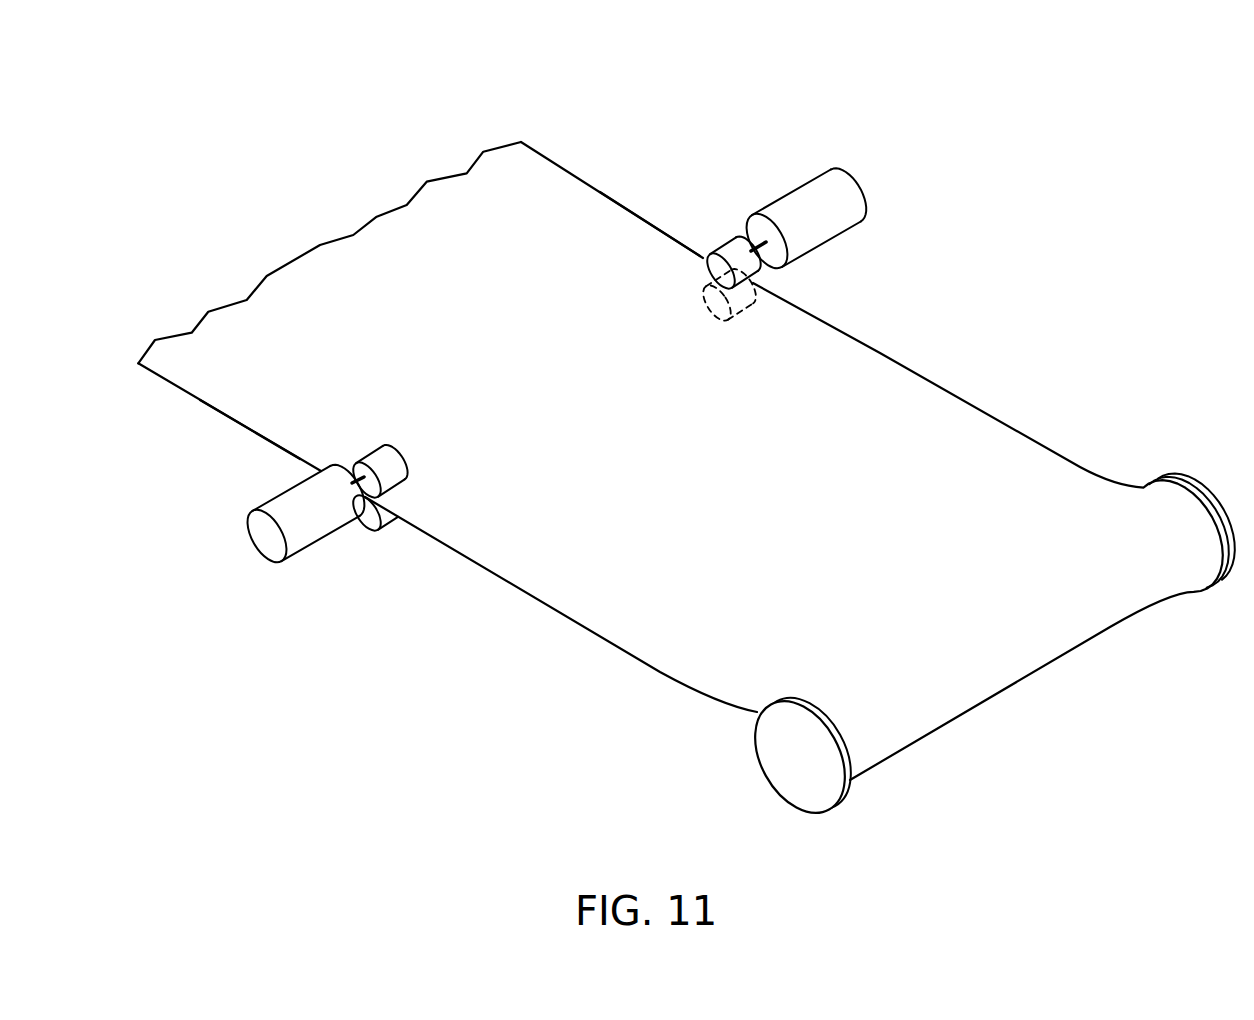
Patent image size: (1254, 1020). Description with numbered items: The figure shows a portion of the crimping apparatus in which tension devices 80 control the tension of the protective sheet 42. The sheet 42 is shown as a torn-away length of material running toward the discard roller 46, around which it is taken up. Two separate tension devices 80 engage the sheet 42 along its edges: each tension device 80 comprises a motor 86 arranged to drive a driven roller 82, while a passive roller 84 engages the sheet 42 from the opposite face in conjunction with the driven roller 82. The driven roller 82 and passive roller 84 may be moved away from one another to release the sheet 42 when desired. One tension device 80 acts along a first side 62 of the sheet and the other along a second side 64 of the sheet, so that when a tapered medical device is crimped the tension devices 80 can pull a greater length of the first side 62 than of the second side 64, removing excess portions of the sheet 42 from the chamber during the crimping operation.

The protective sheet 42 is at (600, 633).
The discard roller 46 is at (784, 780).
The first side of the sheet 62 is at (184, 378).
The second side of the sheet 64 is at (560, 178).
The tension device 80 is at (537, 358).
The driven roller 82 is at (717, 242).
The passive roller 84 is at (703, 303).
The motor 86 is at (858, 182).